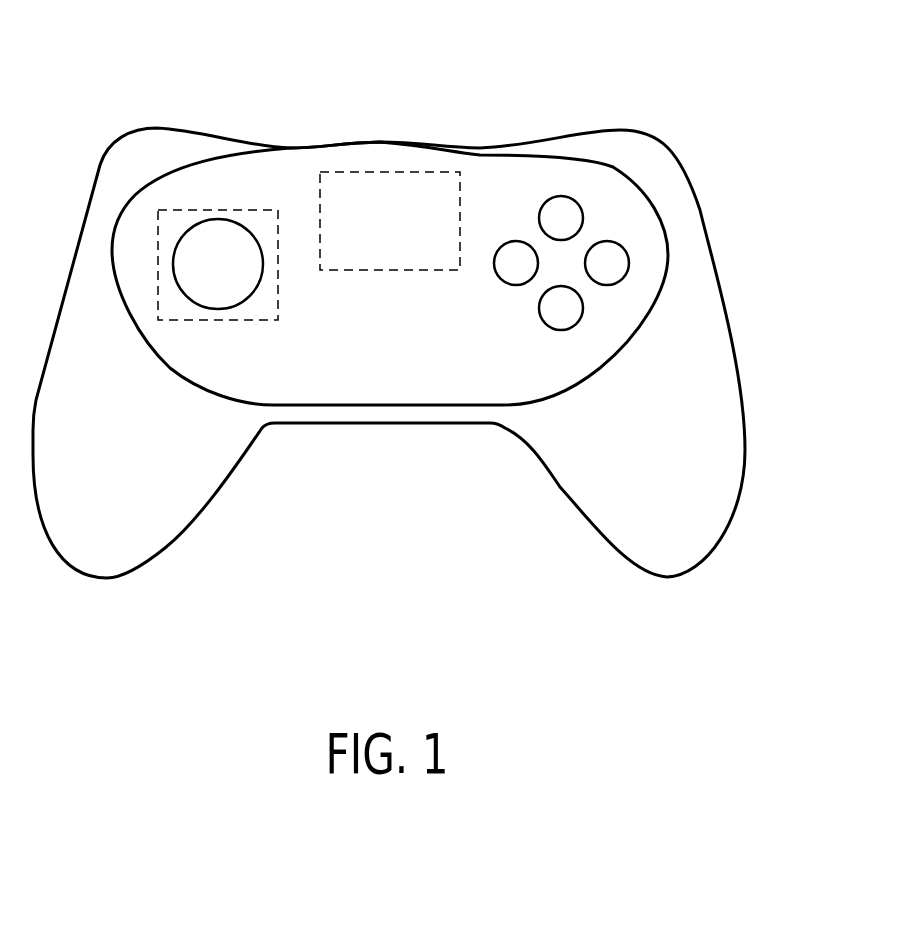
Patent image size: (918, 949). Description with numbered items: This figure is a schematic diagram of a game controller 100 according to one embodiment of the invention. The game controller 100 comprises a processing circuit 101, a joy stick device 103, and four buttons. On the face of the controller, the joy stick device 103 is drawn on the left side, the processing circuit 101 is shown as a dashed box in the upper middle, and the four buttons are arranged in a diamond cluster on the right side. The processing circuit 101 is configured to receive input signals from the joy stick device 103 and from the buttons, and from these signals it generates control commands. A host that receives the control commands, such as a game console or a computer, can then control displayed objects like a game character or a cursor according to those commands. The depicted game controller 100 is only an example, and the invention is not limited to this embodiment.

The game controller 100 is at (642, 72).
The processing circuit 101 is at (378, 170).
The joy stick device 103 is at (258, 334).